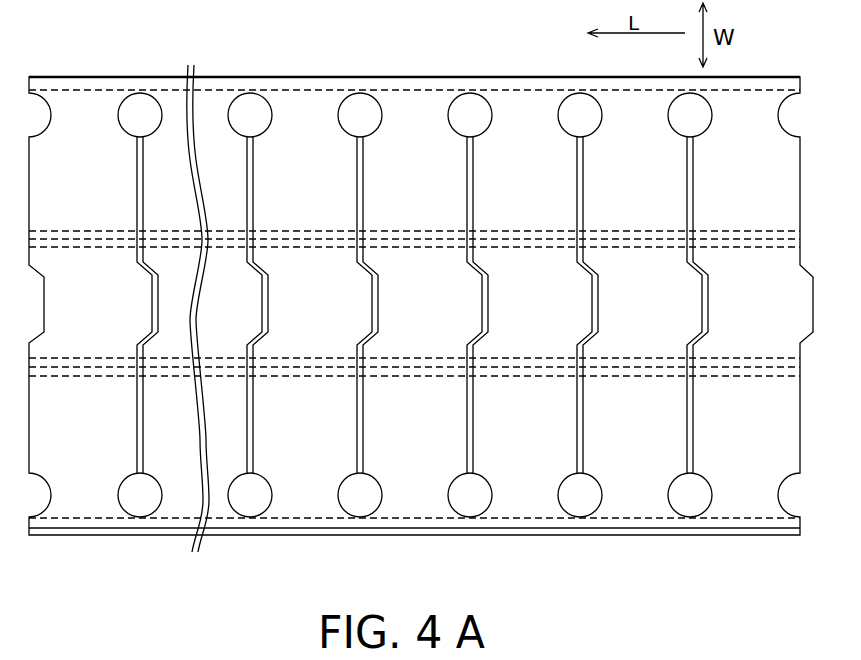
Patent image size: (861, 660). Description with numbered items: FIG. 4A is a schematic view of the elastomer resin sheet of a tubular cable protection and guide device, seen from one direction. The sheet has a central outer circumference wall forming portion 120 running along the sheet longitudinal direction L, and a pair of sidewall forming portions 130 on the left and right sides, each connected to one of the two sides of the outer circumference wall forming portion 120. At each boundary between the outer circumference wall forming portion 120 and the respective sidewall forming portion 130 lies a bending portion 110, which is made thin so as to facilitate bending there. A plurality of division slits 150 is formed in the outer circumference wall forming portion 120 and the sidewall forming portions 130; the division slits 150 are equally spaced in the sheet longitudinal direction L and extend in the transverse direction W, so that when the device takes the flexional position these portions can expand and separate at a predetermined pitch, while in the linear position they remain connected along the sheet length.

The bending portion 110 is at (513, 236).
The outer circumference wall forming portion 120 is at (613, 247).
The sidewall forming portion 130 is at (414, 304).
The division slit 150 is at (364, 220).